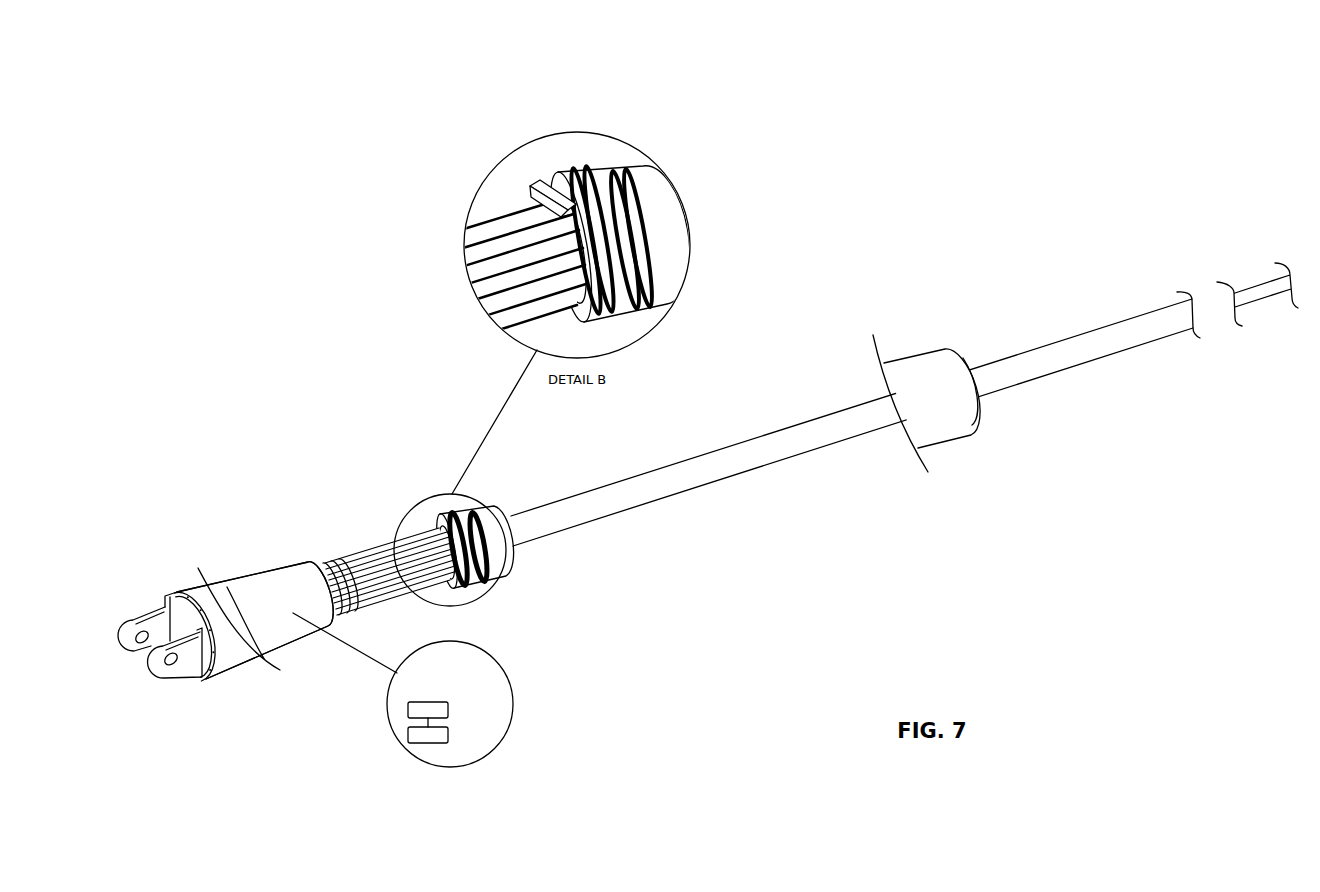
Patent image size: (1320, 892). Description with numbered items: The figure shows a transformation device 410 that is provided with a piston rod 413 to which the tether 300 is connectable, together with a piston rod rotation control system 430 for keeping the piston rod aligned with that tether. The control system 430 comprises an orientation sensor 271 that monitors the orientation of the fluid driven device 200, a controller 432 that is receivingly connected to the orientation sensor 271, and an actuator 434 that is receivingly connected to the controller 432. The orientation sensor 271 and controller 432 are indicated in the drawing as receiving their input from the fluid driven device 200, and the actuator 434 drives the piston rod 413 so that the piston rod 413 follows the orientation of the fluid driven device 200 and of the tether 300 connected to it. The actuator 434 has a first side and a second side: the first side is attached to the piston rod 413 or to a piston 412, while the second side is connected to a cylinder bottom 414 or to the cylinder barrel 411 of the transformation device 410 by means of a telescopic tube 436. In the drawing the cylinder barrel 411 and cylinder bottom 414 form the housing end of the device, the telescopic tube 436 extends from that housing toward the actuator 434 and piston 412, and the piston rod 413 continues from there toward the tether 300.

The transformation device 410 is at (132, 158).
The piston rod rotation control system 430 is at (183, 485).
The actuator 434 is at (550, 181).
The piston 412 is at (633, 220).
The telescopic tube 436 is at (251, 576).
The piston rod 413 is at (686, 461).
The cylinder barrel 411 is at (898, 355).
The tether 300 is at (1260, 283).
The cylinder bottom 414 is at (174, 596).
The fluid driven device 200 is at (464, 682).
The orientation sensor 271 is at (428, 710).
The controller 432 is at (428, 735).